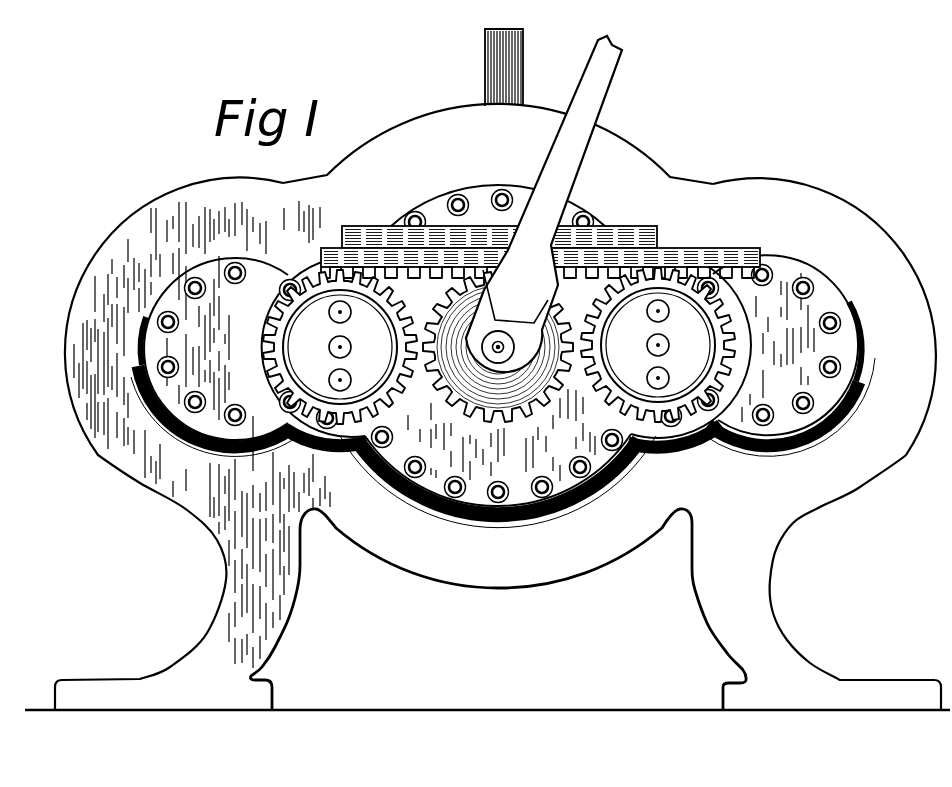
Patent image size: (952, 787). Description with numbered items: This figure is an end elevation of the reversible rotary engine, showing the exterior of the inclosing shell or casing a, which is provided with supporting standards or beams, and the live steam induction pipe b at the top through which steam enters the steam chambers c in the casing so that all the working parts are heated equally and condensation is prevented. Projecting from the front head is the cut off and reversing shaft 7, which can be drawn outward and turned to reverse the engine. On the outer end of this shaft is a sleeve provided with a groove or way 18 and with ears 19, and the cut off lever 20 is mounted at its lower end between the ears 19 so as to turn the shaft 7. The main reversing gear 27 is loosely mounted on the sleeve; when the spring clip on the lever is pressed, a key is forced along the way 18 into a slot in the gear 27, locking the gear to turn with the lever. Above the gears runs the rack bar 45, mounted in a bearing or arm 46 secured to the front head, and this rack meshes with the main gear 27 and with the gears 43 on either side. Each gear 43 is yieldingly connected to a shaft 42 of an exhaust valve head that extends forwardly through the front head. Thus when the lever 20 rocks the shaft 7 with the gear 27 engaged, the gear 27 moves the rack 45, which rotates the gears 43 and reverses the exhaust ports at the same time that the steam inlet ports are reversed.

The inclosing shell or casing a is at (487, 407).
The live steam induction pipe b is at (485, 70).
The steam chambers c is at (503, 356).
The cut off and reversing shaft 7 is at (484, 354).
The groove or way 18 is at (554, 308).
The ears 19 is at (492, 273).
The cut off lever 20 is at (544, 204).
The main reversing gear 27 is at (498, 347).
The shaft 42 is at (336, 343).
The gears 43 is at (289, 284).
The rack bar 45 is at (696, 250).
The bearing or arm 46 is at (472, 226).